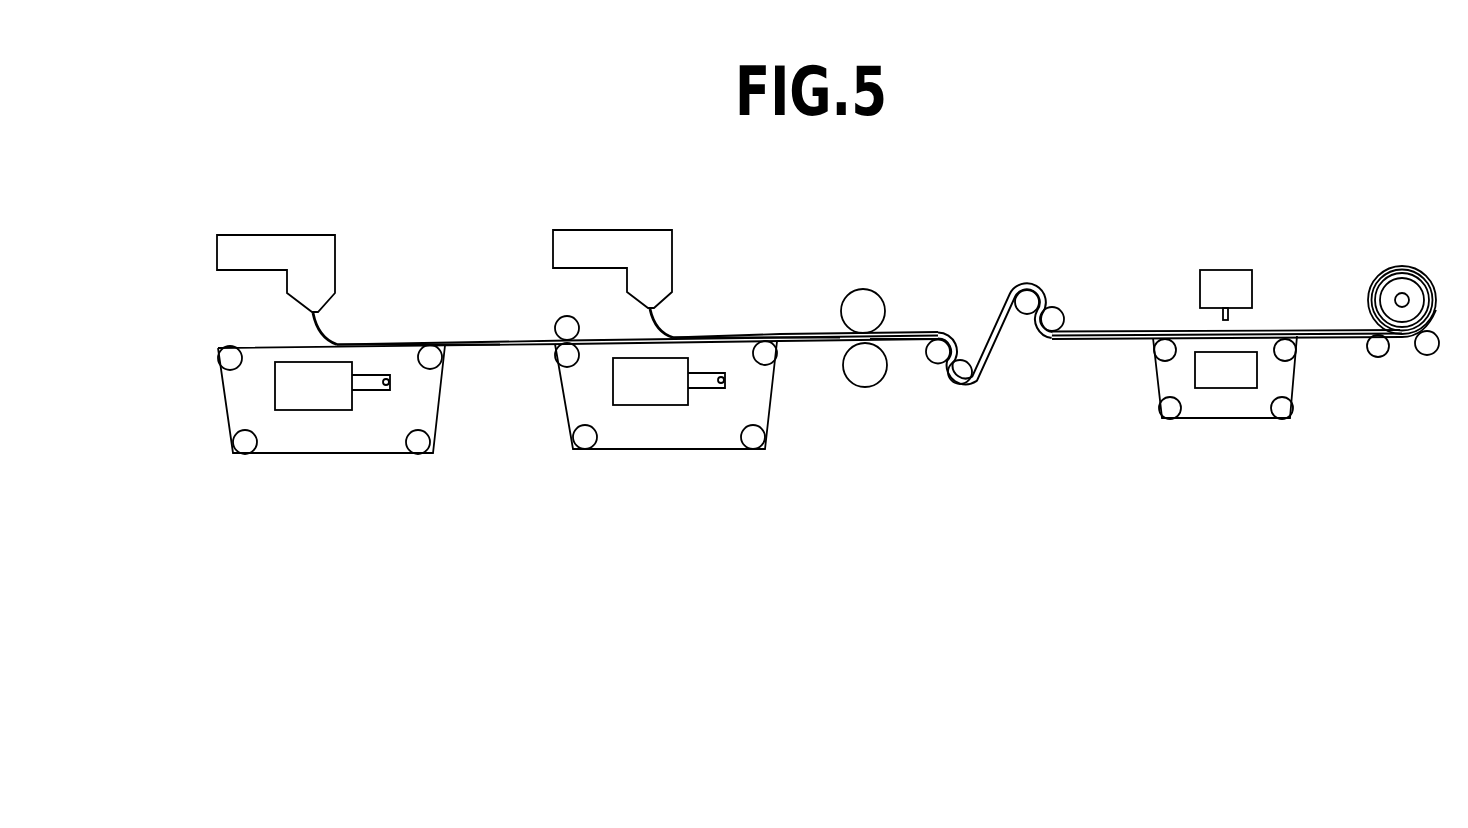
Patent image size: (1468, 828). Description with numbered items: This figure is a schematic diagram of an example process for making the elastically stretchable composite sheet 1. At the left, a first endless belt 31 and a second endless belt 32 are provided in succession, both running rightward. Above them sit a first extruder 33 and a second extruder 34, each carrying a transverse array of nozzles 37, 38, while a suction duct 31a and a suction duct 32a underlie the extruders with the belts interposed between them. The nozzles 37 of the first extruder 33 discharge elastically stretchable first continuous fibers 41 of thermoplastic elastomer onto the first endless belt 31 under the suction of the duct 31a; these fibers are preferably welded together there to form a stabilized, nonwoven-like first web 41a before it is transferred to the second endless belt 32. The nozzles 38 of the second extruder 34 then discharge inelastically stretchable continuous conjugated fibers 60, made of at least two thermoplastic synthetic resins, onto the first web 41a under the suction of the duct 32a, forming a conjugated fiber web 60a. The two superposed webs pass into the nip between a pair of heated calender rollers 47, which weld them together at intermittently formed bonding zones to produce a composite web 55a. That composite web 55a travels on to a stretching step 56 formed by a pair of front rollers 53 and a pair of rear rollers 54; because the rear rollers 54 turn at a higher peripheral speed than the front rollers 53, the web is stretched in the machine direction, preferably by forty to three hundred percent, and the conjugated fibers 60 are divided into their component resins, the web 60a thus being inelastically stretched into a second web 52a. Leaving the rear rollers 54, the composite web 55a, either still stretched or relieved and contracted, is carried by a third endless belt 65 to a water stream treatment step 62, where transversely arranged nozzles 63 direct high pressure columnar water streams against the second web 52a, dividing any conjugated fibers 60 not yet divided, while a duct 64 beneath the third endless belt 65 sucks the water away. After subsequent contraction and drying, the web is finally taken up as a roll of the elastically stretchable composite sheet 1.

The elastically stretchable composite sheet 1 is at (1400, 338).
The first endless belt 31 is at (225, 412).
The suction duct 31a is at (303, 404).
The second endless belt 32 is at (567, 418).
The suction duct 32a is at (643, 398).
The first extruder 33 is at (318, 240).
The second extruder 34 is at (603, 238).
The nozzles 37 is at (315, 312).
The nozzles 38 is at (650, 308).
The first continuous fibers 41 is at (318, 337).
The first web 41a is at (405, 340).
The heated calender rollers 47 is at (873, 298).
The second web 52a is at (1097, 332).
The front rollers 53 is at (947, 338).
The rear rollers 54 is at (1023, 292).
The composite web 55a is at (900, 343).
The stretching step 56 is at (997, 295).
The conjugated fibers 60 is at (648, 327).
The conjugated fiber web 60a is at (820, 333).
The water stream treatment step 62 is at (1204, 327).
The nozzles 63 is at (1228, 317).
The duct 64 is at (1227, 378).
The third endless belt 65 is at (1157, 377).